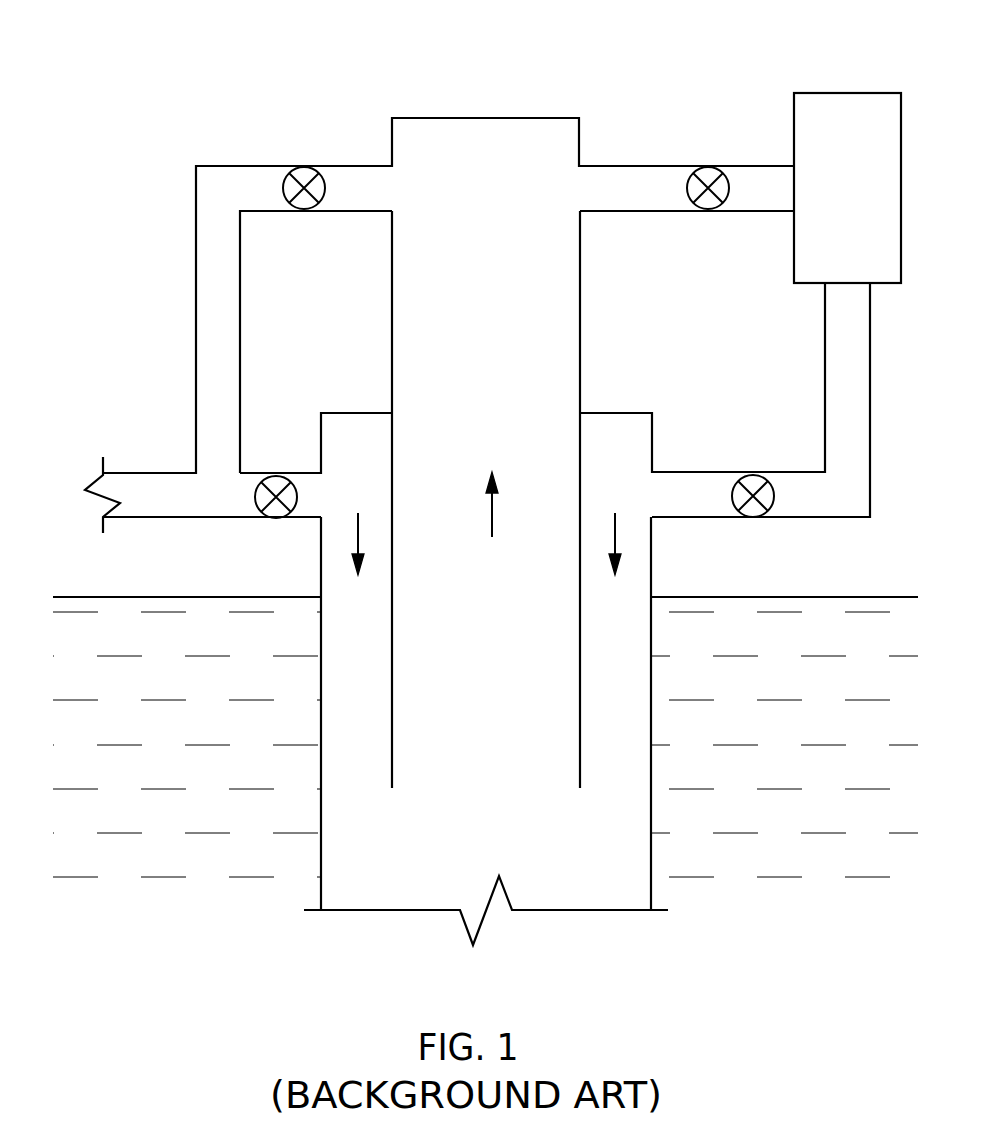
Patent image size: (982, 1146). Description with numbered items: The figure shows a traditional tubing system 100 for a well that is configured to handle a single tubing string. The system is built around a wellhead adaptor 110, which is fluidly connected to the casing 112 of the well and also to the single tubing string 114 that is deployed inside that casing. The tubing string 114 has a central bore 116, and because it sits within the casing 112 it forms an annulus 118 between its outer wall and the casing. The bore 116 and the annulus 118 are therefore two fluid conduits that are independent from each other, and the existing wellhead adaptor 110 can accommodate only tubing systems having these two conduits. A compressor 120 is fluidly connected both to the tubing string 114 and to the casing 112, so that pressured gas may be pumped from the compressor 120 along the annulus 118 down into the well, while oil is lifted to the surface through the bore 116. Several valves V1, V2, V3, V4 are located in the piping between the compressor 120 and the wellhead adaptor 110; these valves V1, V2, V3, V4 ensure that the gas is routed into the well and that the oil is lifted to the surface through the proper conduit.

The tubing system 100 is at (800, 55).
The wellhead adaptor 110 is at (621, 345).
The casing 112 is at (651, 758).
The tubing string 114 is at (580, 665).
The bore 116 is at (453, 737).
The annulus 118 is at (595, 737).
The compressor 120 is at (827, 202).
The valve V1 is at (708, 167).
The valve V2 is at (753, 475).
The valve V3 is at (304, 167).
The valve V4 is at (276, 476).